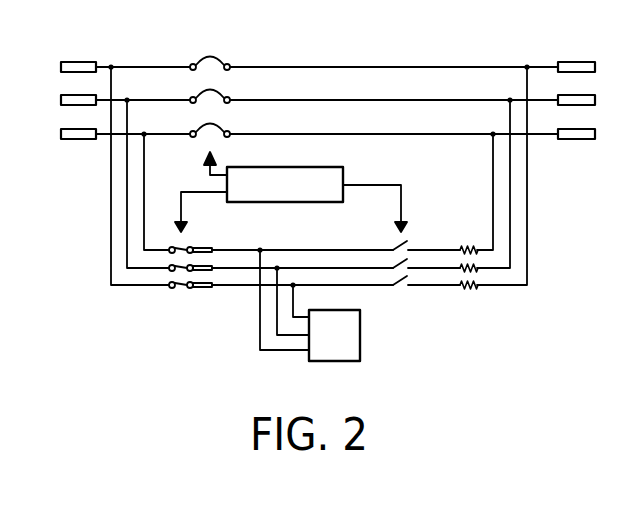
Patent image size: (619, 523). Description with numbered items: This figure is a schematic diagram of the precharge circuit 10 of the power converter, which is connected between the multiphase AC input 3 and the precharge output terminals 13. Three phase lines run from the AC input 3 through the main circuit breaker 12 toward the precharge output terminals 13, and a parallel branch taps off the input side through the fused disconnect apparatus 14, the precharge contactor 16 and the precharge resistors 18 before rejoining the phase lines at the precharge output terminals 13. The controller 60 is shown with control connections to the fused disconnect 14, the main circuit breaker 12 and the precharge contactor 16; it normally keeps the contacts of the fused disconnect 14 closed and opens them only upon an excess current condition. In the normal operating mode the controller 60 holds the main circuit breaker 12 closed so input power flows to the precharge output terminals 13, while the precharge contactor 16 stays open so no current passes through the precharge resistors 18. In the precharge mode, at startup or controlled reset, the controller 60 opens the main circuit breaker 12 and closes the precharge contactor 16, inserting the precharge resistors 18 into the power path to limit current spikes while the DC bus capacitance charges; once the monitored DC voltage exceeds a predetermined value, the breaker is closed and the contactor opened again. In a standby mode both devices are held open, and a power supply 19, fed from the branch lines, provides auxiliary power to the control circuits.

The precharge circuit 10 is at (128, 24).
The AC input 3 is at (70, 46).
The precharge output terminals 13 is at (543, 50).
The main circuit breaker 12 is at (190, 40).
The controller 60 is at (337, 167).
The fused disconnect apparatus 14 is at (176, 298).
The precharge contactor 16 is at (386, 238).
The precharge resistors 18 is at (481, 306).
The power supply 19 is at (360, 335).